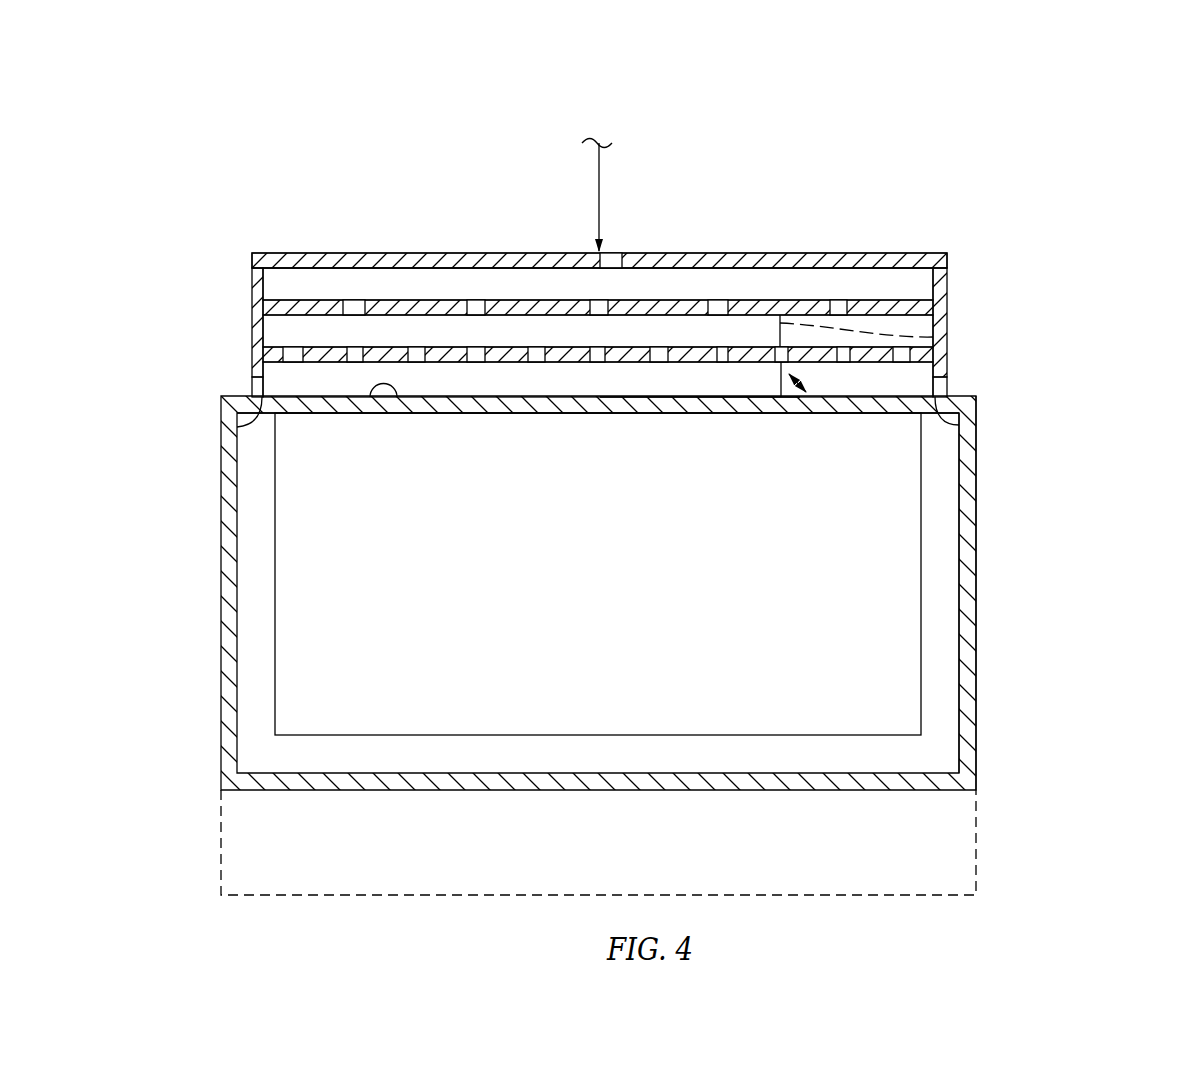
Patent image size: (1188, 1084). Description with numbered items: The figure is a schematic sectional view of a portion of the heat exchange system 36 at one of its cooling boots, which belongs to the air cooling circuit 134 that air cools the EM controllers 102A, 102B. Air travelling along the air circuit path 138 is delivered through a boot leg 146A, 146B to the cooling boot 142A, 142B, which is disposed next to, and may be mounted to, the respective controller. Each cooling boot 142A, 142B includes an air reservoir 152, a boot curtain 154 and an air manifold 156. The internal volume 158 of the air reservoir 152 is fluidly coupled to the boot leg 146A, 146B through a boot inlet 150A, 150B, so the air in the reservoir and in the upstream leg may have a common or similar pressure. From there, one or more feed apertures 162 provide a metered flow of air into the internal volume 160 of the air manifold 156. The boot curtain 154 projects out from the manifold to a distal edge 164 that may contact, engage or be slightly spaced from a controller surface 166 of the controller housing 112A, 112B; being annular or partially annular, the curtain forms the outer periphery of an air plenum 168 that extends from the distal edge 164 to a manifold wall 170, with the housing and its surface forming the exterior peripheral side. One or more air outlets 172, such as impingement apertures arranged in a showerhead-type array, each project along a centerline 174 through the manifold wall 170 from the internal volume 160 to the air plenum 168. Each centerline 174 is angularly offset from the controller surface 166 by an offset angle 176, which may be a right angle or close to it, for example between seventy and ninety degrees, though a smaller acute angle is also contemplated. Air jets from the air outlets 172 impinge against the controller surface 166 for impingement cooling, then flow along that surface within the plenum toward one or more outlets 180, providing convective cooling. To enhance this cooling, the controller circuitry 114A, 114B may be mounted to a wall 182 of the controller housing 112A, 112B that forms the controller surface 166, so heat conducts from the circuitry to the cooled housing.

The heat exchange system 36 is at (1095, 112).
The EM controller 102A is at (691, 593).
The EM controller 102B is at (992, 467).
The controller housing 112A is at (1055, 593).
The controller housing 112B is at (976, 537).
The controller circuitry 114A is at (598, 574).
The controller circuitry 114B is at (655, 641).
The air cooling circuit 134 is at (688, 130).
The air circuit path 138 is at (606, 128).
The cooling boot 142A is at (657, 222).
The cooling boot 142B is at (967, 248).
The boot leg 146A is at (515, 197).
The boot leg 146B is at (597, 183).
The boot inlet 150A is at (666, 225).
The boot inlet 150B is at (613, 252).
The air reservoir 152 is at (240, 280).
The boot curtain 154 is at (240, 362).
The air manifold 156 is at (240, 325).
The internal volume 158 is at (385, 288).
The internal volume 160 is at (312, 330).
The feed apertures 162 is at (593, 300).
The distal edge 164 is at (258, 412).
The controller surface 166 is at (395, 412).
The air plenum 168 is at (575, 385).
The manifold wall 170 is at (690, 362).
The air outlets 172 is at (418, 362).
The centerline 174 is at (933, 337).
The offset angle 176 is at (800, 380).
The outlets 180 is at (250, 382).
The wall 182 is at (334, 415).